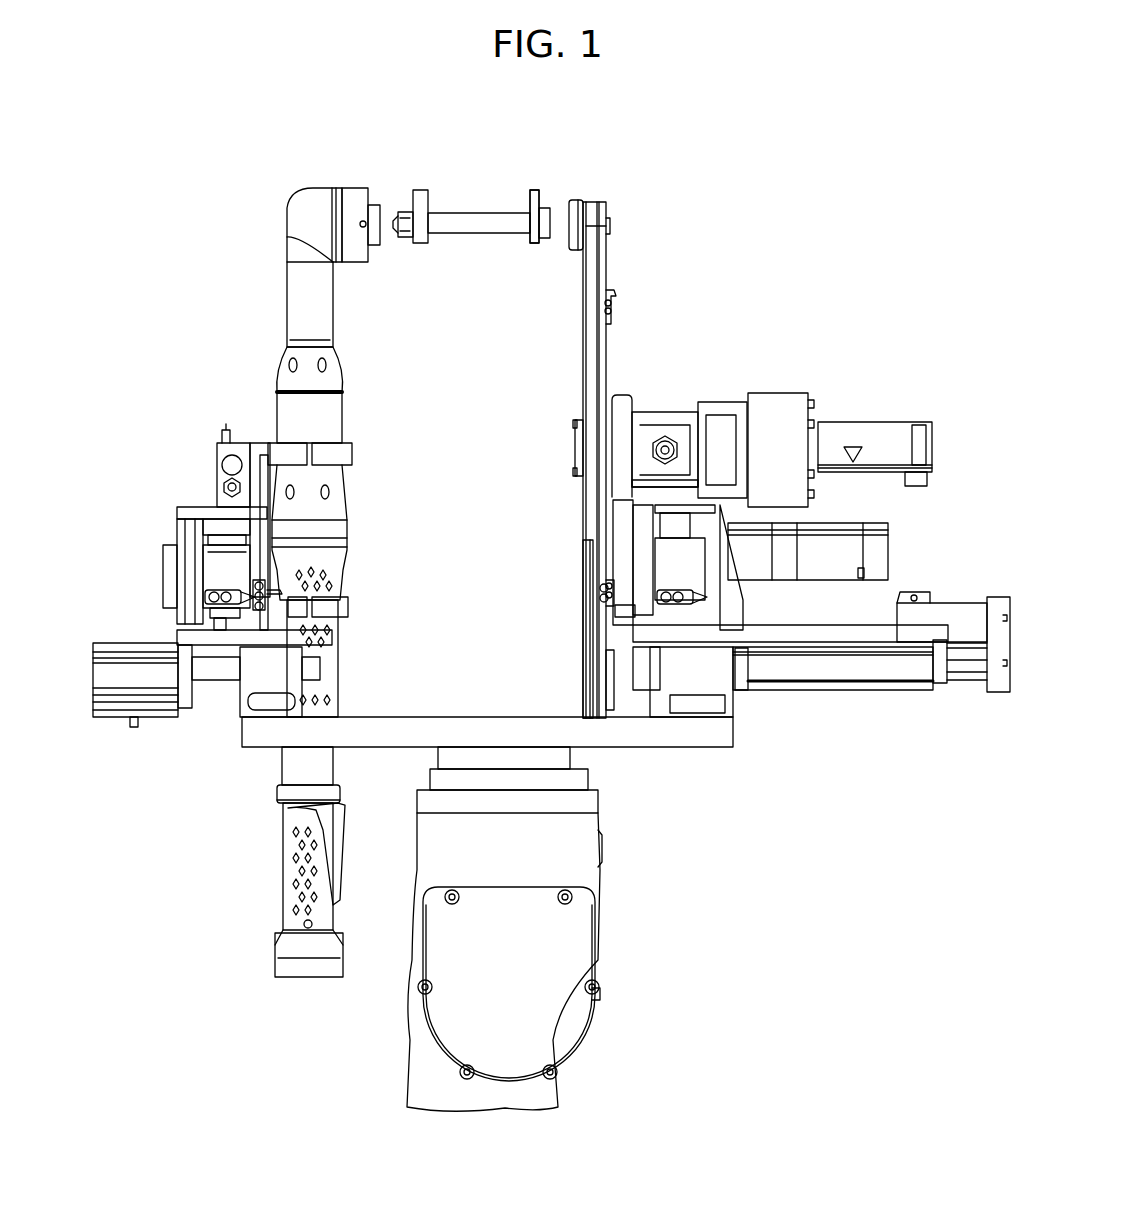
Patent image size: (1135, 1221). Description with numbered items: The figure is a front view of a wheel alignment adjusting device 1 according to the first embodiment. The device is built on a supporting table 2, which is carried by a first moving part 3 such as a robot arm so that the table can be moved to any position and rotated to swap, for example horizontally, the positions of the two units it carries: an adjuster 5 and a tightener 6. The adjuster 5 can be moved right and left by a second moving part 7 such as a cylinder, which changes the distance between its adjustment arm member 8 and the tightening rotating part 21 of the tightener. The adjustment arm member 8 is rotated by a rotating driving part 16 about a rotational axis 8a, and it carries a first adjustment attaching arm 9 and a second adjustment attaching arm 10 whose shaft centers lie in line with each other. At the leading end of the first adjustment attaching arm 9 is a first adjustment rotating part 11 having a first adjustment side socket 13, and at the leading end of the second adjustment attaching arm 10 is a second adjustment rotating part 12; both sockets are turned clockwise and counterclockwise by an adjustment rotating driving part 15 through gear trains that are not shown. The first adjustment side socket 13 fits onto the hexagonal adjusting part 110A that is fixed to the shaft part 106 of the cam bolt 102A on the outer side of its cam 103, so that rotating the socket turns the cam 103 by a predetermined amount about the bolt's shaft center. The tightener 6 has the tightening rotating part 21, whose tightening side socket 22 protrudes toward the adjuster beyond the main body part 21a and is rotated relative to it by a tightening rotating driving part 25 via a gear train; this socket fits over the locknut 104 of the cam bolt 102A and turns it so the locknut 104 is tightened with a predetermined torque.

The wheel alignment adjusting device 1 is at (610, 200).
The supporting table 2 is at (680, 737).
The first moving part 3 is at (583, 936).
The adjuster 5 is at (772, 402).
The tightener 6 is at (304, 540).
The second moving part 7 is at (835, 668).
The adjustment arm member 8 is at (585, 503).
The rotational axis 8a is at (578, 432).
The first adjustment attaching arm 9 is at (595, 356).
The second adjustment attaching arm 10 is at (590, 612).
The first adjustment rotating part 11 is at (594, 226).
The second adjustment rotating part 12 is at (606, 672).
The first adjustment side socket 13 is at (578, 207).
The adjustment rotating driving part 15 is at (875, 435).
The rotating driving part 16 is at (878, 553).
The tightening rotating part 21 is at (338, 218).
The main body part 21a is at (360, 255).
The tightening side socket 22 is at (378, 215).
The tightening rotating driving part 25 is at (294, 872).
The cam bolt 102A is at (543, 194).
The cam 103 is at (430, 195).
The locknut 104 is at (411, 240).
The shaft part 106 is at (481, 225).
The adjusting part 110A is at (543, 240).